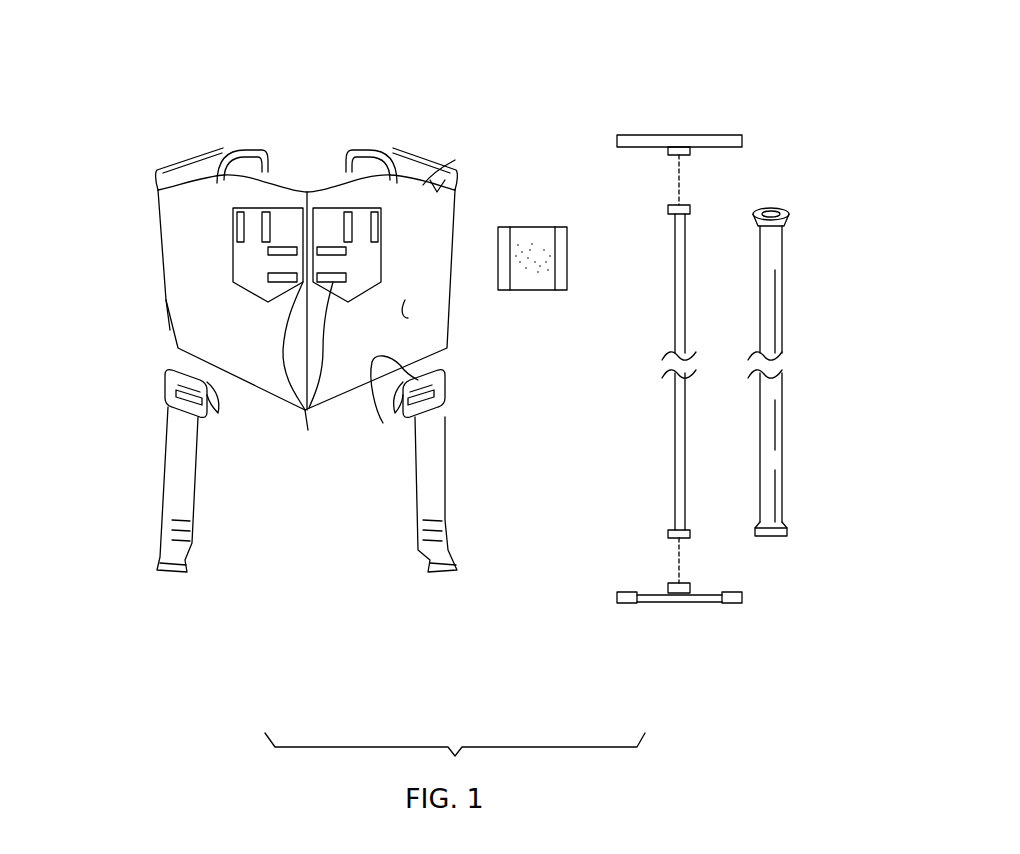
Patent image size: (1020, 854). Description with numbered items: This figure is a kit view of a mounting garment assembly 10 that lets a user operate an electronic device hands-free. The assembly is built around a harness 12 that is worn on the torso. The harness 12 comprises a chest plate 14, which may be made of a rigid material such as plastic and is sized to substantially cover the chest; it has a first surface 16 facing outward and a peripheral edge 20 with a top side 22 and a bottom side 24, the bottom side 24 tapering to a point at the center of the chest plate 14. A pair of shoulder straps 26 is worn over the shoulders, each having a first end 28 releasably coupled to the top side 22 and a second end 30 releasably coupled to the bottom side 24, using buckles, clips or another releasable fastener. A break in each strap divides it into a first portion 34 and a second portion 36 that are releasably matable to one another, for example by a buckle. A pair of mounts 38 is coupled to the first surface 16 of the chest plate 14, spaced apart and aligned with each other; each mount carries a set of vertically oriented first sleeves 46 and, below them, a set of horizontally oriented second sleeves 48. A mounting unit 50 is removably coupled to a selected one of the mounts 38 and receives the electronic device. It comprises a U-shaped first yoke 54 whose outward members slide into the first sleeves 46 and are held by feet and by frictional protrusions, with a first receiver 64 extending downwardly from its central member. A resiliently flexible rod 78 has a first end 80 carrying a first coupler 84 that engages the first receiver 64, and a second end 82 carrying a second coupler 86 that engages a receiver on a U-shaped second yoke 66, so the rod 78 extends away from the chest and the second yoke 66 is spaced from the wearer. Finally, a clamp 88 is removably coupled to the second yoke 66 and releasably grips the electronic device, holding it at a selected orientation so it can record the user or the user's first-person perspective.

The mounting garment assembly 10 is at (489, 82).
The harness 12 is at (277, 148).
The chest plate 14 is at (422, 168).
The first surface 16 is at (412, 304).
The peripheral edge 20 is at (167, 284).
The top side 22 is at (308, 190).
The bottom side 24 is at (351, 402).
The shoulder straps 26 is at (205, 150).
The first end 28 is at (427, 187).
The second end 30 is at (389, 406).
The first portion 34 is at (160, 168).
The second portion 36 is at (216, 408).
The mounts 38 is at (347, 237).
The first sleeves 46 is at (385, 258).
The second sleeves 48 is at (308, 375).
The mounting unit 50 is at (798, 230).
The first yoke 54 is at (722, 135).
The first receiver 64 is at (673, 155).
The second yoke 66 is at (732, 603).
The rod 78 is at (677, 432).
The first end 80 is at (668, 210).
The second end 82 is at (680, 538).
The first coupler 84 is at (690, 208).
The second coupler 86 is at (668, 534).
The clamp 88 is at (563, 227).